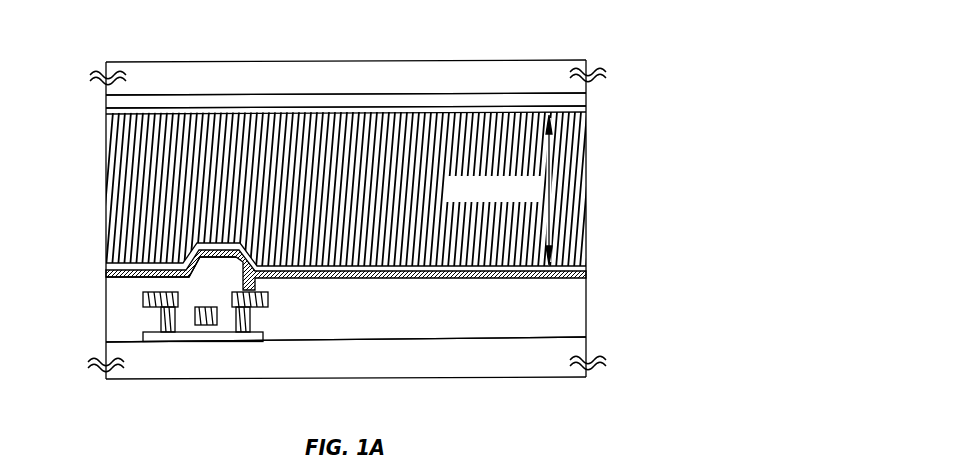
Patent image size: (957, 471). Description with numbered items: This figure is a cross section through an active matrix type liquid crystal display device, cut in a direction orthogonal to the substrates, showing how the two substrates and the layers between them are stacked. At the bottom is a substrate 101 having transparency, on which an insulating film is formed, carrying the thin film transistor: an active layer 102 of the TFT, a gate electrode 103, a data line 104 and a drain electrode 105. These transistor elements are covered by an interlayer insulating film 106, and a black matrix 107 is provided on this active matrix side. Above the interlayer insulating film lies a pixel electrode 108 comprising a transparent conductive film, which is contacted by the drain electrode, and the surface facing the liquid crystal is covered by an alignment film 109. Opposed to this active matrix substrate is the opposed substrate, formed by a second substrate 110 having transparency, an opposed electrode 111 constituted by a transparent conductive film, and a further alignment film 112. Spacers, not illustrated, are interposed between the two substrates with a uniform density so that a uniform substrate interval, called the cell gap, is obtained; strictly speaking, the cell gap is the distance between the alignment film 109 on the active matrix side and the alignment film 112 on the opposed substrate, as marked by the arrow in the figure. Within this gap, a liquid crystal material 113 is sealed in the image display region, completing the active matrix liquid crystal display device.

The substrate 101 is at (570, 355).
The active layer 102 is at (182, 338).
The gate electrode 103 is at (198, 320).
The data line 104 is at (155, 305).
The drain electrode 105 is at (250, 330).
The interlayer insulating film 106 is at (458, 313).
The black matrix 107 is at (122, 280).
The pixel electrode 108 is at (570, 273).
The alignment film 109 is at (568, 268).
The substrate 110 is at (362, 75).
The opposed electrode 111 is at (432, 100).
The alignment film 112 is at (515, 108).
The liquid crystal material 113 is at (393, 250).